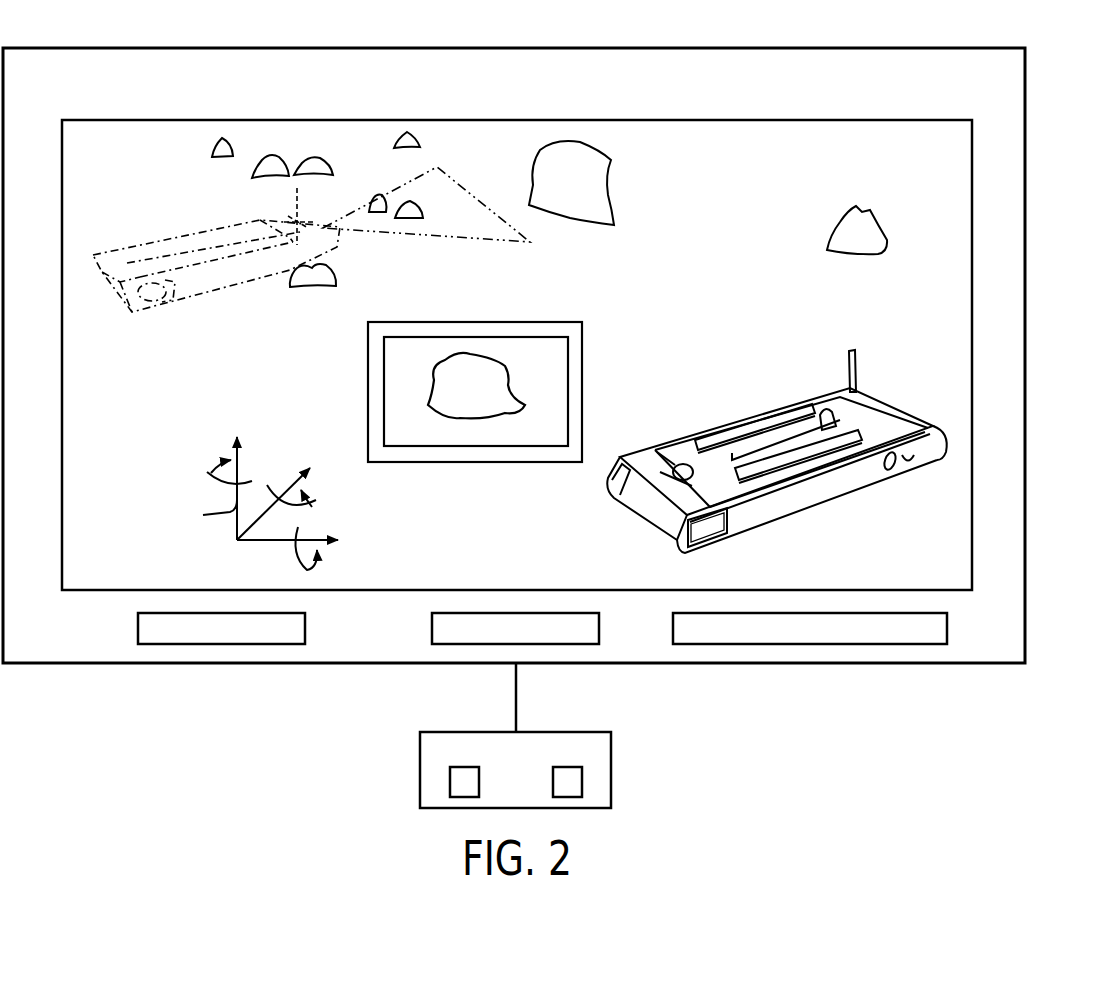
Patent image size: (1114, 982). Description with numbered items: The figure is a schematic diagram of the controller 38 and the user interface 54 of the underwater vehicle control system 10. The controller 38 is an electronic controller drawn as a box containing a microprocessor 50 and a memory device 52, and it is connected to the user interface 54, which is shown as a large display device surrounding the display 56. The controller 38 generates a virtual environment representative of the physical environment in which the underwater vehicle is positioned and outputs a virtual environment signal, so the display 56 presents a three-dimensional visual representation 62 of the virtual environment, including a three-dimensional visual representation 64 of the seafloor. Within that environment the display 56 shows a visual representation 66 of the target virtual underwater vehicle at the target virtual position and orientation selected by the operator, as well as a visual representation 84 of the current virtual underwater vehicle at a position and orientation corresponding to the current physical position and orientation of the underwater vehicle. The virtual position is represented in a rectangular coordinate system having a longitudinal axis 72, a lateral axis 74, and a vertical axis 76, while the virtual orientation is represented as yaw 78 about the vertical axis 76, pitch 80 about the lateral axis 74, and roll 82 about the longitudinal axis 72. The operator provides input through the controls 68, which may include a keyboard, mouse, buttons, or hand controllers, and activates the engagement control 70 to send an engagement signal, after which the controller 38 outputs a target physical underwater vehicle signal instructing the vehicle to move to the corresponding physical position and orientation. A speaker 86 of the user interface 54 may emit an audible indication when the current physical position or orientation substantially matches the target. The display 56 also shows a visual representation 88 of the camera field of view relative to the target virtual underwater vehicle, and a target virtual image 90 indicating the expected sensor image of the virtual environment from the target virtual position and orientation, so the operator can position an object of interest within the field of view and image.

The underwater vehicle control system 10 is at (794, 709).
The controller 38 is at (477, 730).
The microprocessor 50 is at (450, 782).
The memory device 52 is at (582, 782).
The user interface 54 is at (1026, 225).
The display 56 is at (631, 118).
The visual representation of the virtual environment 62 is at (297, 148).
The visual representation of the seafloor 64 is at (855, 430).
The visual representation of the target virtual underwater vehicle 66 is at (208, 235).
The controls 68 is at (600, 628).
The engagement control 70 is at (948, 628).
The longitudinal axis 72 is at (310, 540).
The lateral axis 74 is at (297, 488).
The vertical axis 76 is at (205, 513).
The yaw 78 is at (207, 472).
The pitch 80 is at (316, 500).
The roll 82 is at (297, 563).
The visual representation of the current virtual underwater vehicle 84 is at (830, 486).
The speaker 86 is at (138, 628).
The visual representation of the field of view 88 is at (400, 187).
The target virtual image 90 is at (470, 462).